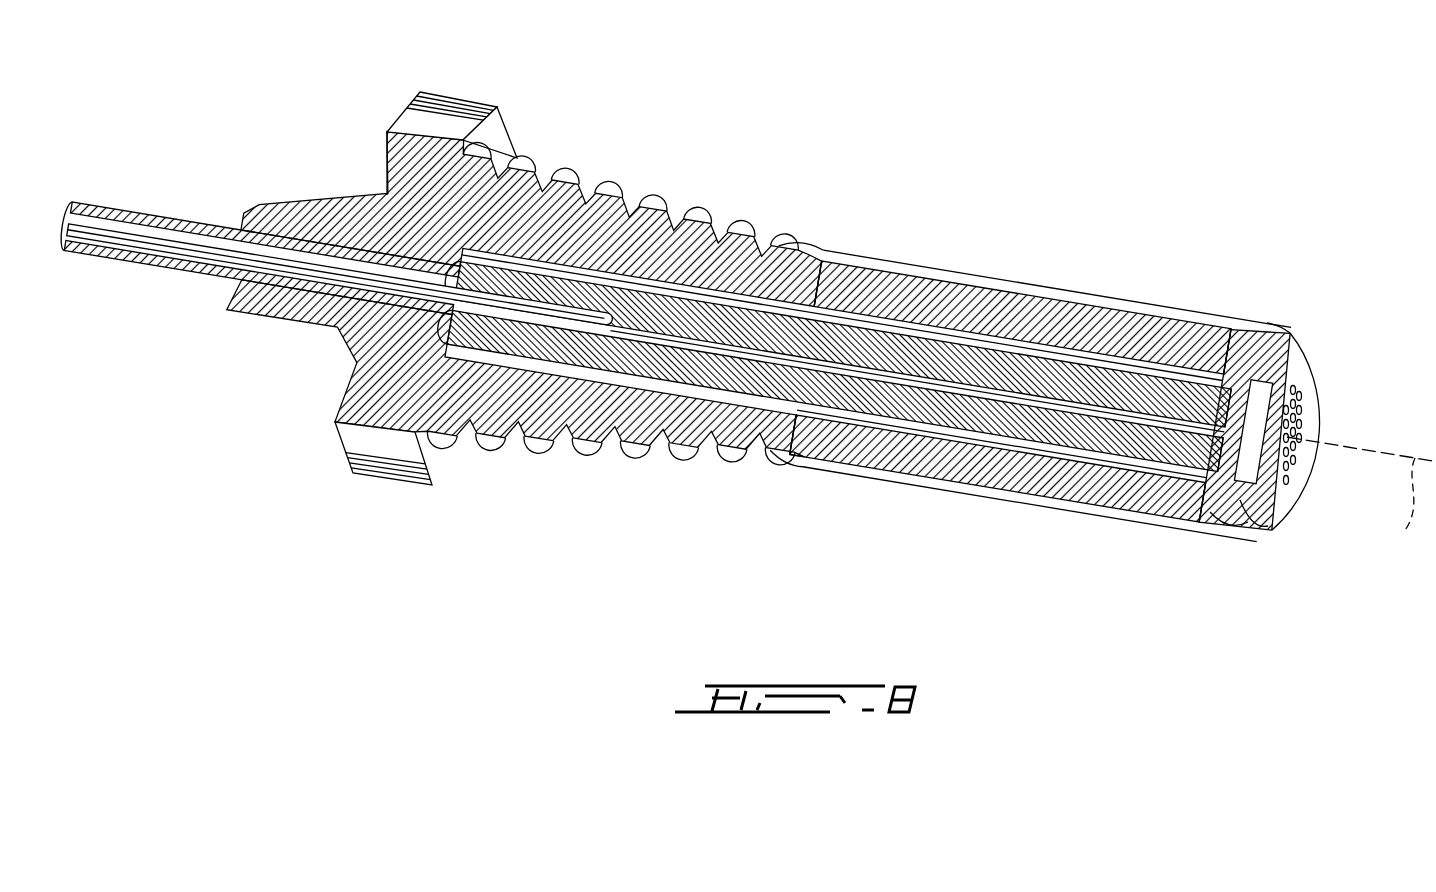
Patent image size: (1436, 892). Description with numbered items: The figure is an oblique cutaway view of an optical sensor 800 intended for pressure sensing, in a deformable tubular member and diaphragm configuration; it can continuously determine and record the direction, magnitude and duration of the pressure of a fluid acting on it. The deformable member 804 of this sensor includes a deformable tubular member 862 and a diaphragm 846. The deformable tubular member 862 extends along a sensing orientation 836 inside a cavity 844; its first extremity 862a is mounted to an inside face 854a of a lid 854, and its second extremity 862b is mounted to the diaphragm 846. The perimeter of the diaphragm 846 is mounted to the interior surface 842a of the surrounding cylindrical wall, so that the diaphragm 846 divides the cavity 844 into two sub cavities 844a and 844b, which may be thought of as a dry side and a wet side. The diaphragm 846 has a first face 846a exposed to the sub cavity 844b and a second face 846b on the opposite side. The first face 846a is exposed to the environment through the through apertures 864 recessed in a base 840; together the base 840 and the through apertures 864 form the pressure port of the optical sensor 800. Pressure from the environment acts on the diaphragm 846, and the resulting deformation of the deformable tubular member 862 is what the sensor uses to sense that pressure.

The optical sensor 800 is at (1170, 136).
The lid 854 is at (372, 215).
The inside face of lid 854a is at (498, 280).
The first extremity of deformable tubular member 862a is at (528, 262).
The deformable member 804 is at (908, 362).
The sub cavity 844a is at (833, 320).
The deformable tubular member 862 is at (1000, 355).
The cavity 844 is at (1100, 360).
The interior surface of cylindrical wall 842a is at (1160, 370).
The second extremity of deformable tubular member 862b is at (1258, 347).
The diaphragm 846 is at (1272, 380).
The base 840 is at (1290, 372).
The through apertures 864 is at (1290, 437).
The sensing orientation 836 is at (1360, 501).
The first face of diaphragm 846a is at (1225, 515).
The second face of diaphragm 846b is at (1248, 520).
The sub cavity 844b is at (1283, 505).